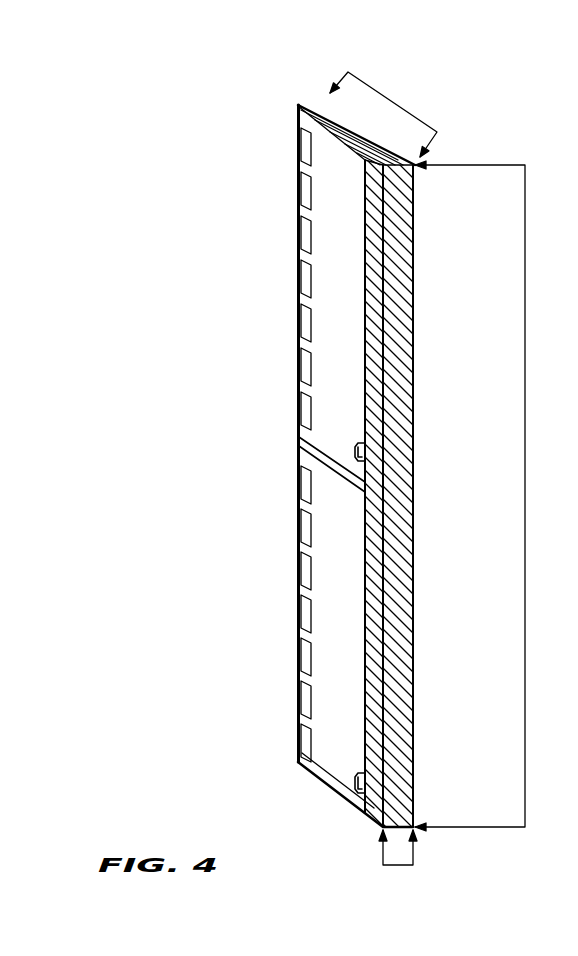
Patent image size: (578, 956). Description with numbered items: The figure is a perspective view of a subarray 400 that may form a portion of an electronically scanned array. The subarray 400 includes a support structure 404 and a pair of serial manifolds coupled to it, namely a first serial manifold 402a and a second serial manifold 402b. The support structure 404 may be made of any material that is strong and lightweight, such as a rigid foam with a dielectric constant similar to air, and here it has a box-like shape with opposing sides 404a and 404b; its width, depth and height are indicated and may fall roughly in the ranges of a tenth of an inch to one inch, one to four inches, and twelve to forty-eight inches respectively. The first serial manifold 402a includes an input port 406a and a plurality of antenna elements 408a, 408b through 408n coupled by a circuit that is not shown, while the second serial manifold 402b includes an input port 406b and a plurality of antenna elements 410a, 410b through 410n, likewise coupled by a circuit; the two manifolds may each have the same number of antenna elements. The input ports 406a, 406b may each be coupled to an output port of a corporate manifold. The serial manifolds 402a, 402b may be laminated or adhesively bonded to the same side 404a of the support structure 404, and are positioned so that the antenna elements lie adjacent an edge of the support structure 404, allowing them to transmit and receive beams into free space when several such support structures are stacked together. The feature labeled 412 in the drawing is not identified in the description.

The subarray 400 is at (200, 178).
The first serial manifold 402a is at (328, 591).
The second serial manifold 402b is at (370, 266).
The support structure 404 is at (413, 360).
The side of support structure 404a is at (328, 244).
The side of support structure 404b is at (425, 216).
The input port 406a is at (360, 775).
The input port 406b is at (360, 443).
The antenna element 408a is at (297, 740).
The antenna element 408b is at (297, 686).
The antenna element 408n is at (297, 483).
The antenna element 410a is at (297, 405).
The antenna element 410b is at (297, 357).
The antenna element 410n is at (297, 140).
The divider between panels 412 is at (297, 443).